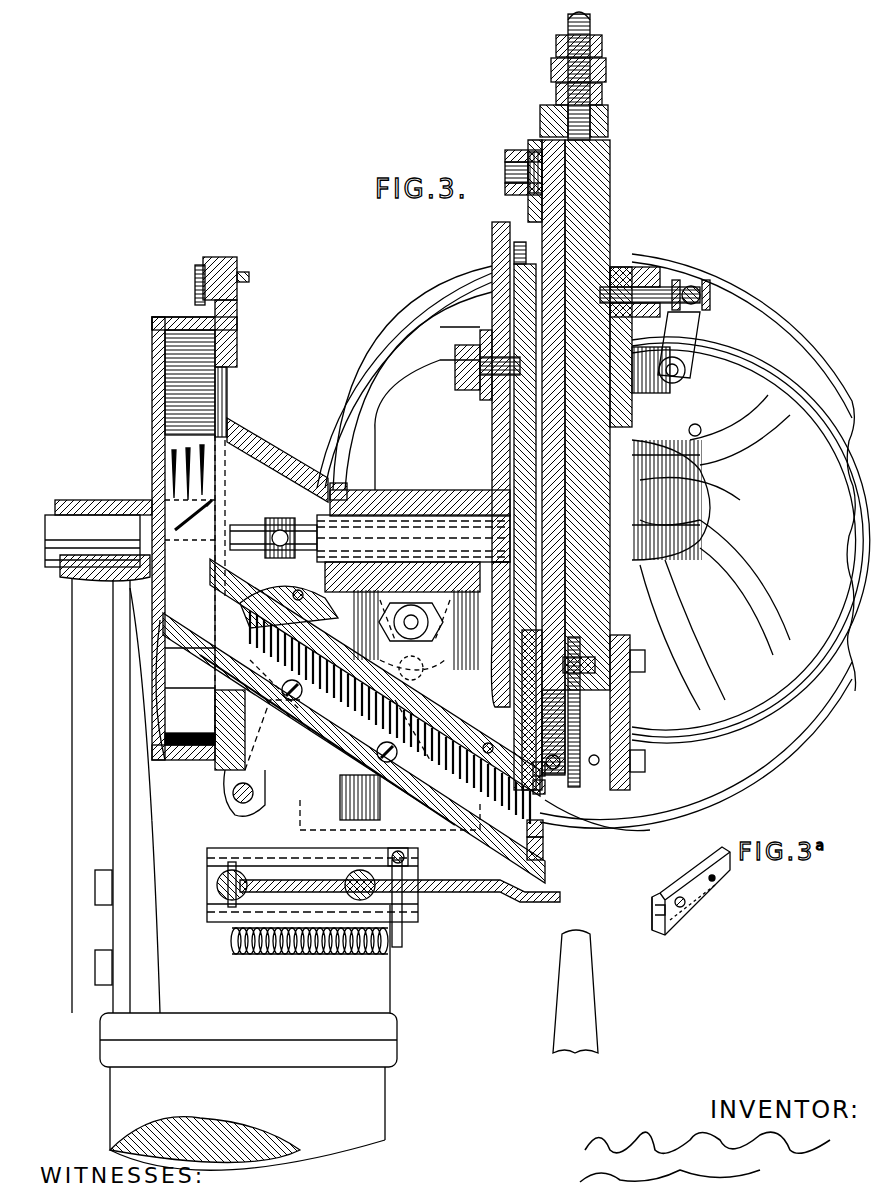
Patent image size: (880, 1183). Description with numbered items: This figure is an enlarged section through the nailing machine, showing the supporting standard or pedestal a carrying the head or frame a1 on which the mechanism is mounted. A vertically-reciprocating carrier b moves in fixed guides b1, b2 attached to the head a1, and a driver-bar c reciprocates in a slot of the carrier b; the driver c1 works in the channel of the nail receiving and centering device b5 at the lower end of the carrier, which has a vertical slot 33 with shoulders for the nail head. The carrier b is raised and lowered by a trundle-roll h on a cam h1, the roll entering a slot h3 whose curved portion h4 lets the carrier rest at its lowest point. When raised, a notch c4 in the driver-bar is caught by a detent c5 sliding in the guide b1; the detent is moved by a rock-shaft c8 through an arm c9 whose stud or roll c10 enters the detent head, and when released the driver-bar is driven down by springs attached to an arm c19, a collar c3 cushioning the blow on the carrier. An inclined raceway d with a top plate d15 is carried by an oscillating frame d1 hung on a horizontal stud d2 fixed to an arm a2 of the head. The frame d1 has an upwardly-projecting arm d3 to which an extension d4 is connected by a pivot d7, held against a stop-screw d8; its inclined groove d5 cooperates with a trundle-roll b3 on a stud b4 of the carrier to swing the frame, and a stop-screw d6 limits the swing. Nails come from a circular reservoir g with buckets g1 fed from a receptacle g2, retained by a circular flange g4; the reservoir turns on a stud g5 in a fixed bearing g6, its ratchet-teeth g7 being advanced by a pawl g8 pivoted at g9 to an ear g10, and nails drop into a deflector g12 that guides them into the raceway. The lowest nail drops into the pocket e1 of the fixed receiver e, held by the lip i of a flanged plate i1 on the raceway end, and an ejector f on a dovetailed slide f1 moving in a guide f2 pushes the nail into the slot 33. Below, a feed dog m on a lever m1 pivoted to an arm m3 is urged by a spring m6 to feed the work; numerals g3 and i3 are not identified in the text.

In FIG. 3, the supporting standard or pedestal a is at (378, 1100).
In FIG. 3, the head or frame a1 is at (385, 975).
In FIG. 3, the arm or ear a2 is at (388, 462).
In FIG. 3, the vertically-reciprocating carrier b is at (520, 235).
In FIG. 3, the fixed guide b1 is at (620, 272).
In FIG. 3, the fixed guide b2 is at (648, 665).
In FIG. 3, the trundle-roll b3 is at (515, 153).
In FIG. 3, the stud b4 is at (508, 172).
In FIG. 3, the nail receiving and centering device b5 is at (585, 775).
In FIG. 3, the driver-bar c is at (602, 225).
In FIG. 3, the driver c1 is at (582, 735).
In FIG. 3, the washer or collar c3 is at (605, 125).
In FIG. 3, the notch or recess c4 is at (612, 290).
In FIG. 3, the locking pin or detent c5 is at (686, 292).
In FIG. 3, the rock-shaft c8 is at (686, 372).
In FIG. 3, the arm c9 is at (694, 328).
In FIG. 3, the stud or roll c10 is at (698, 290).
In FIG. 3, the arm c19 is at (602, 68).
In FIG. 3, the inclined chute or raceway d is at (345, 740).
In FIG. 3, the oscillating frame d1 is at (340, 482).
In FIG. 3, the horizontal stud d2 is at (370, 553).
In FIG. 3, the upwardly-projecting arm d3 is at (490, 425).
In FIG. 3, the extension d4 is at (500, 285).
In FIG. 3, the inclined groove or way d5 is at (519, 243).
In FIG. 3, the stop-screw d6 is at (228, 808).
In FIG. 3, the pivot d7 is at (462, 375).
In FIG. 3, the stud or stop-screw d8 is at (160, 690).
In FIG. 3, the top plate d15 is at (268, 603).
In FIG. 3, the fixed nail-receiver e is at (545, 848).
In FIG. 3, the slot or pocket e1 is at (600, 836).
In FIG. 3, the reciprocating ejector f is at (575, 974).
In FIG. 3, the dovetailed slide f1 is at (345, 800).
In FIG. 3, the guide f2 is at (375, 828).
In FIG. 3, the reservoir g is at (165, 760).
In FIG. 3, the bucket g1 is at (232, 362).
In FIG. 3, the mouth or receptacle g2 is at (262, 440).
In FIG. 3, the cylinder chamber g3 is at (190, 684).
In FIG. 3, the circular flange g4 is at (222, 772).
In FIG. 3, the stud g5 is at (97, 548).
In FIG. 3, the fixed bearing g6 is at (108, 485).
In FIG. 3, the ratchet-teeth g7 is at (190, 318).
In FIG. 3, the pawl g8 is at (196, 298).
In FIG. 3, the pivot g9 is at (250, 278).
In FIG. 3, the ear g10 is at (232, 262).
In FIG. 3, the hopper or deflector g12 is at (220, 492).
In FIG. 3, the trundle-roll h is at (668, 478).
In FIG. 3, the cam h1 is at (660, 572).
In FIG. 3, the slot h3 is at (690, 490).
In FIG. 3, the curved portion h4 is at (650, 560).
In FIG. 3A, the lip or flange i is at (662, 928).
In FIG. 3, the flanged plate i1 is at (545, 785).
In FIG. 3A, the flanged plate i1 is at (658, 900).
In FIG. 3, the screw i3 is at (555, 770).
In FIG. 3, the dog m is at (532, 895).
In FIG. 3, the lever m1 is at (405, 925).
In FIG. 3, the arm m3 is at (218, 880).
In FIG. 3, the spring m6 is at (312, 935).
In FIG. 3, the vertical slot 33 is at (520, 718).